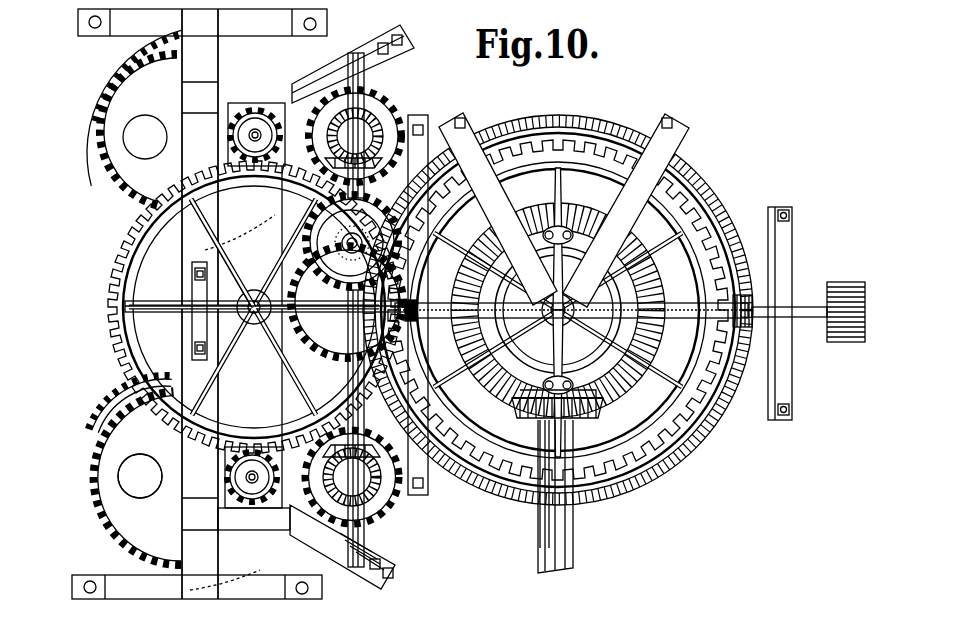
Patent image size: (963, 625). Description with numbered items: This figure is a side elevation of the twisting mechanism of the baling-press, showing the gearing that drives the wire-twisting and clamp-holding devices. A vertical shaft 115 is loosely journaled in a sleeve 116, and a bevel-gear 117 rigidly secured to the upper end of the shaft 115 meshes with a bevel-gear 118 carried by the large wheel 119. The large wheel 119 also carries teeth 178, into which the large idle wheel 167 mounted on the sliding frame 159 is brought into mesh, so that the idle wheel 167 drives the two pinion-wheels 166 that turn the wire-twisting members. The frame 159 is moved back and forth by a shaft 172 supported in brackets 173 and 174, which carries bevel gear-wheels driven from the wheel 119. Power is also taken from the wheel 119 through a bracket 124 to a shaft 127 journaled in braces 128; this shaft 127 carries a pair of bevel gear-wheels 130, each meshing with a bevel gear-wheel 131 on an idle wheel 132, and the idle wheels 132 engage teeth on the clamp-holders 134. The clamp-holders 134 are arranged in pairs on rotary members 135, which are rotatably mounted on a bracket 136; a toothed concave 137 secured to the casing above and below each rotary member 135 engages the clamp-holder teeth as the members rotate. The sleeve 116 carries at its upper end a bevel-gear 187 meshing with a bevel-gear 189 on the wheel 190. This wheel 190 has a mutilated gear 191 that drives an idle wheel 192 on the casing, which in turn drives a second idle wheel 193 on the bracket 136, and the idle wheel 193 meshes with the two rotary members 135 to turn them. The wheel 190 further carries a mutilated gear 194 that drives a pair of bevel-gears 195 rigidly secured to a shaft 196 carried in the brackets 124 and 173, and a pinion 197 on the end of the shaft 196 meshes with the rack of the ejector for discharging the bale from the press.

The shaft 115 is at (515, 405).
The sleeve 116 is at (552, 537).
The bevel-gear 117 is at (605, 405).
The bevel-gear 118 is at (588, 240).
The large wheel 119 is at (688, 390).
The bracket 124 is at (418, 465).
The shaft 127 is at (365, 543).
The braces 128 is at (402, 40).
The bevel gear-wheels 130 is at (368, 163).
The bevel gear-wheel 131 is at (335, 148).
The idle wheel 132 is at (381, 112).
The clamp-holders 134 is at (108, 497).
The rotary member 135 is at (146, 494).
The bracket 136 is at (192, 572).
The toothed concave 137 is at (140, 205).
The frame 159 is at (265, 354).
The pinion-wheel 166 is at (264, 116).
The large idle wheel 167 is at (264, 170).
The shaft 172 is at (657, 305).
The bracket 173 is at (790, 240).
The bracket 174 is at (205, 323).
The teeth 178 is at (625, 465).
The bevel-gear 187 is at (545, 420).
The bevel-gear 189 is at (535, 228).
The wheel 190 is at (700, 445).
The mutilated gear 191 is at (512, 120).
The idle wheel 192 is at (305, 323).
The idle wheel 193 is at (152, 270).
The mutilated gear 194 is at (612, 128).
The bevel-gears 195 is at (365, 330).
The shaft 196 is at (808, 318).
The pinion 197 is at (847, 290).